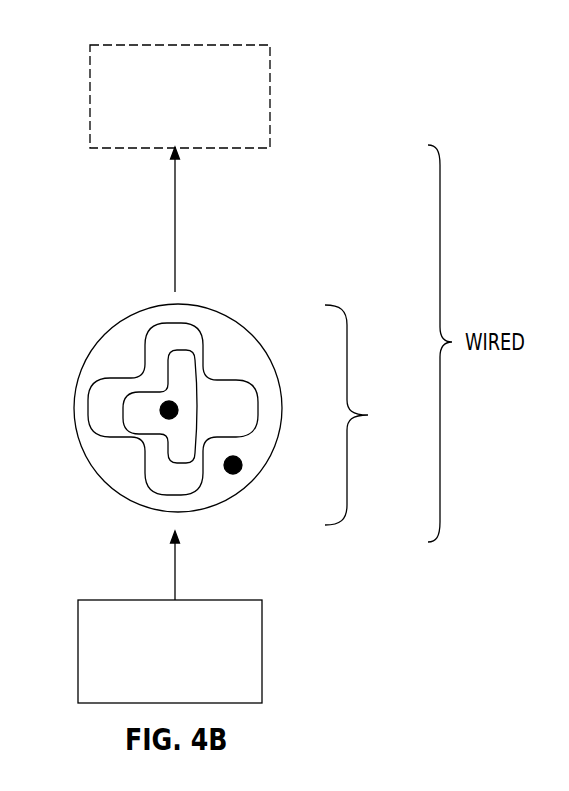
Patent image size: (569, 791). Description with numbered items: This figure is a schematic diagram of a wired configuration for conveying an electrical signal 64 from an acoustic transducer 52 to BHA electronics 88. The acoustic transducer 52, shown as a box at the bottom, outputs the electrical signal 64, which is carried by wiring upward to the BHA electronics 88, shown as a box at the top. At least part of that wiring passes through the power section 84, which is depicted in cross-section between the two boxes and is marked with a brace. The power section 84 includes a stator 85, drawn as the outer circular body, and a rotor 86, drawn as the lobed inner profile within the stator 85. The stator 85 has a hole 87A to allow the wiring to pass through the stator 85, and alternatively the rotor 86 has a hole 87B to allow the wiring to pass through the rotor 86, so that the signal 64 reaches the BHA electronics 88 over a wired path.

The BHA electronics 88 is at (180, 96).
The electrical signal 64 is at (210, 212).
The stator 85 is at (92, 357).
The rotor 86 is at (138, 403).
The hole 87A is at (255, 512).
The hole 87B is at (175, 404).
The power section 84 is at (365, 415).
The acoustic transducer 52 is at (170, 651).